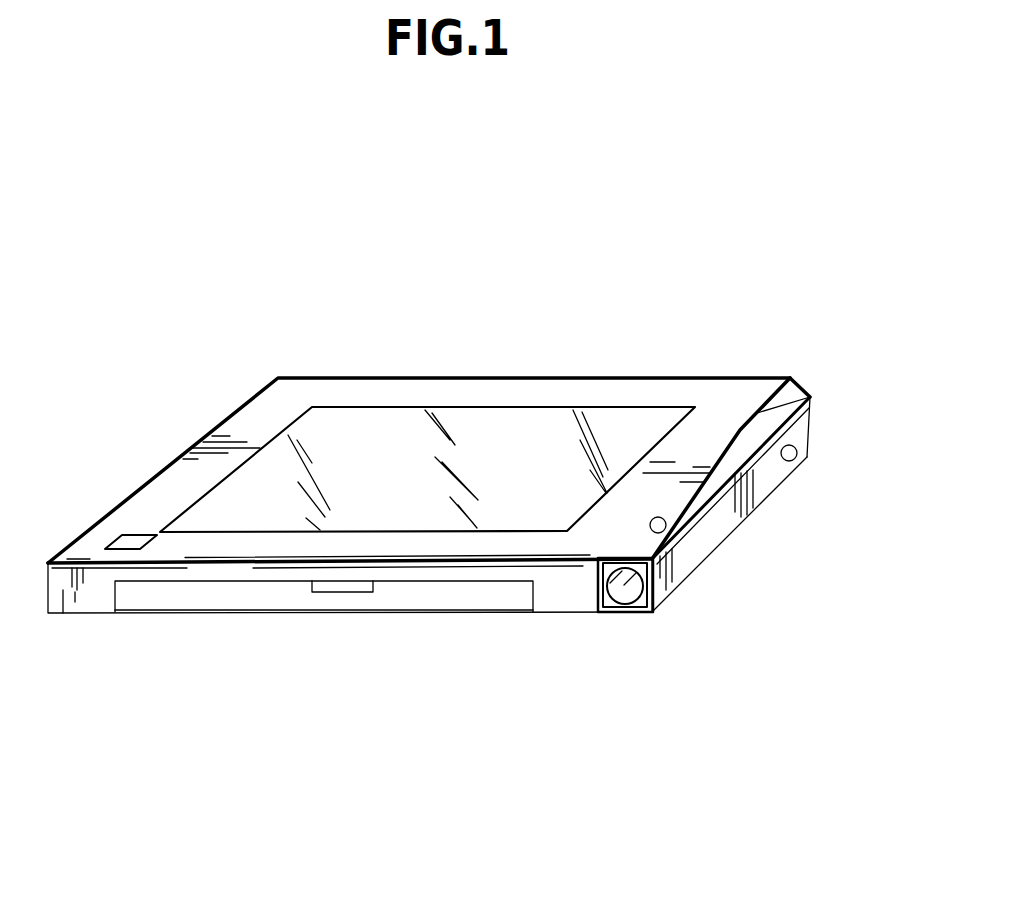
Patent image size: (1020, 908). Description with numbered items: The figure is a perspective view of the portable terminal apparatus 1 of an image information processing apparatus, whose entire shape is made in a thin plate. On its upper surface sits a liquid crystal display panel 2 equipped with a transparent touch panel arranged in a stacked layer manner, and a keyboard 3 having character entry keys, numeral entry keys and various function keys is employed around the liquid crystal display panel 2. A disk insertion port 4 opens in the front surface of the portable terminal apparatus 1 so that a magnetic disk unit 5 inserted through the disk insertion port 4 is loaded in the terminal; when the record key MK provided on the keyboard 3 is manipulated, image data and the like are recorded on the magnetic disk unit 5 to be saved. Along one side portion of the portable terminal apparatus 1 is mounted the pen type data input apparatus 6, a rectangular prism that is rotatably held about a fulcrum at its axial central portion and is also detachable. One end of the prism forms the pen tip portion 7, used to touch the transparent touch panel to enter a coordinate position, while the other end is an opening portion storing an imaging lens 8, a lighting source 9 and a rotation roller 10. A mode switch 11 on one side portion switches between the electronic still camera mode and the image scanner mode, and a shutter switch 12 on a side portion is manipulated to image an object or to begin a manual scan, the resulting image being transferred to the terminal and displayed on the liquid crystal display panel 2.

The portable terminal apparatus 1 is at (625, 378).
The liquid crystal display panel 2 is at (355, 432).
The keyboard 3 is at (720, 418).
The disk insertion port 4 is at (228, 570).
The magnetic disk unit 5 is at (353, 600).
The pen type data input apparatus 6 is at (758, 512).
The pen tip portion 7 is at (812, 398).
The imaging lens 8 is at (628, 590).
The lighting source 9 is at (598, 565).
The rotation roller 10 is at (647, 587).
The mode switch 11 is at (796, 458).
The shutter switch 12 is at (667, 525).
The record key MK is at (118, 552).